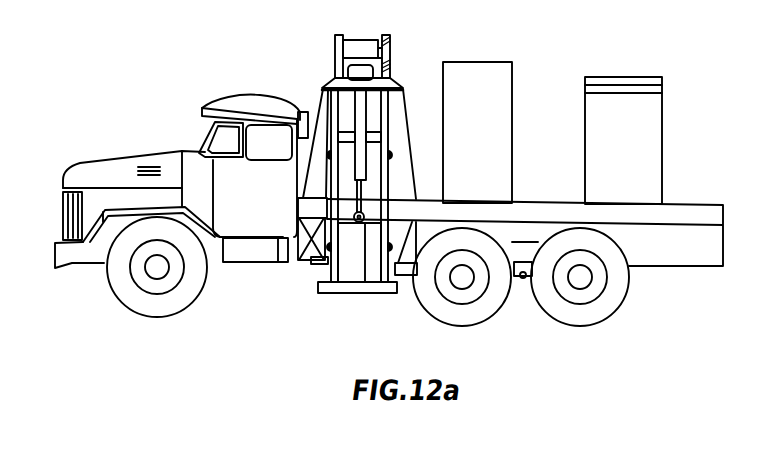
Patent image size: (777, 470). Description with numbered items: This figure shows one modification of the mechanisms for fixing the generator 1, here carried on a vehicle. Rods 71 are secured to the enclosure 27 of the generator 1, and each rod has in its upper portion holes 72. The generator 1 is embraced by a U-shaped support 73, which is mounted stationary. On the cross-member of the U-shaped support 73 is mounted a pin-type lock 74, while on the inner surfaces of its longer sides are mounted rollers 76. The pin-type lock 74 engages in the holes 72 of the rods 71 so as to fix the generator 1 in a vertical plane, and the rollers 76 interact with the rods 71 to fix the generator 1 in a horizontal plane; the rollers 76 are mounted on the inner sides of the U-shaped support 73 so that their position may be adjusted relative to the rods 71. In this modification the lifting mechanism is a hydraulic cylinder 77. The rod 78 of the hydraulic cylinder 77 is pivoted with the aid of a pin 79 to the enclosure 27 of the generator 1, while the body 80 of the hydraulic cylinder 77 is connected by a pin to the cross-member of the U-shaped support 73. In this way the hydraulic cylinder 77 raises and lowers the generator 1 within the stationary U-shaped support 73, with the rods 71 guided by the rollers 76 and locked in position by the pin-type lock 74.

The generator 1 is at (386, 300).
The enclosure 27 is at (343, 268).
The rods 71 is at (388, 126).
The holes 72 is at (395, 64).
The U-shaped support 73 is at (330, 81).
The pin-type lock 74 is at (355, 47).
The rollers 76 is at (330, 153).
The hydraulic cylinder 77 is at (352, 181).
The rod 78 is at (362, 203).
The pin 79 is at (358, 223).
The body 80 is at (350, 86).